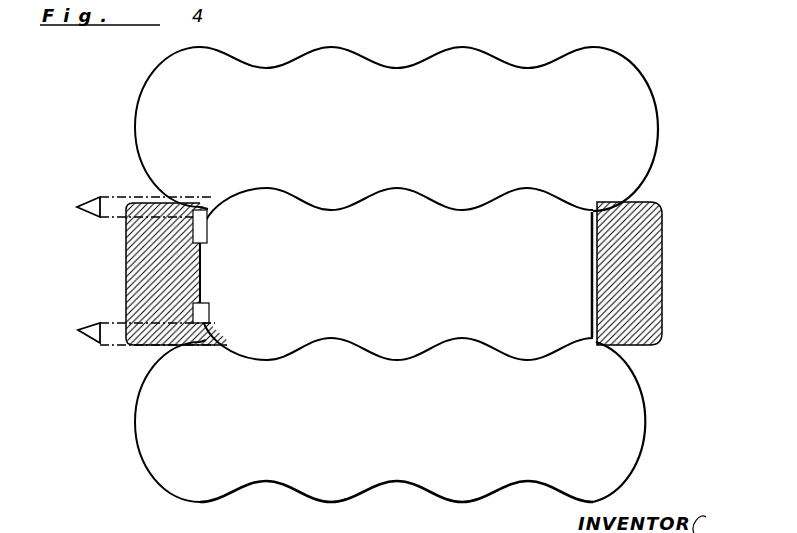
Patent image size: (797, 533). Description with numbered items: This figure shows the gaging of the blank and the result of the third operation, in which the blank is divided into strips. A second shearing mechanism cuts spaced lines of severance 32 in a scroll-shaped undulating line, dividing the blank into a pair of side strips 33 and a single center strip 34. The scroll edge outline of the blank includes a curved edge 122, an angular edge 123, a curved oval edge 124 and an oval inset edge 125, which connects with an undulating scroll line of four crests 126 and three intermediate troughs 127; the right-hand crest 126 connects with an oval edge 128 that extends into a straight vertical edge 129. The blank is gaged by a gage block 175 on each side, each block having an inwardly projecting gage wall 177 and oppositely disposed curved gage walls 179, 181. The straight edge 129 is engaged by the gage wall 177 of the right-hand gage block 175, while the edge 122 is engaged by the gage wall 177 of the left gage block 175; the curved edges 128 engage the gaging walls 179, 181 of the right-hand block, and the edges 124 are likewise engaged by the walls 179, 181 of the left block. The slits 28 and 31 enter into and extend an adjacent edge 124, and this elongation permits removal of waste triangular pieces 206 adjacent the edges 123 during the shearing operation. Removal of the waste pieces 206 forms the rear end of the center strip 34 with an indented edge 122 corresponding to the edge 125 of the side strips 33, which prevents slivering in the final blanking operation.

The side strip 33 is at (611, 58).
The line of severance 32 is at (495, 197).
The center strip 34 is at (451, 289).
The oval inset edge 125 is at (143, 88).
The crest 126 is at (478, 49).
The trough 127 is at (534, 70).
The oval edge 128 is at (652, 168).
The gage block 175 is at (126, 270).
The gage wall 177 is at (584, 263).
The curved gage wall 179 is at (150, 342).
The curved gage wall 181 is at (170, 210).
The straight vertical edge 129 is at (590, 320).
The angular edge 123 is at (208, 228).
The curved edge 122 is at (205, 243).
The curved oval edge 124 is at (195, 206).
The slit 28 is at (222, 200).
The slit 31 is at (216, 344).
The waste triangular piece 206 is at (88, 205).